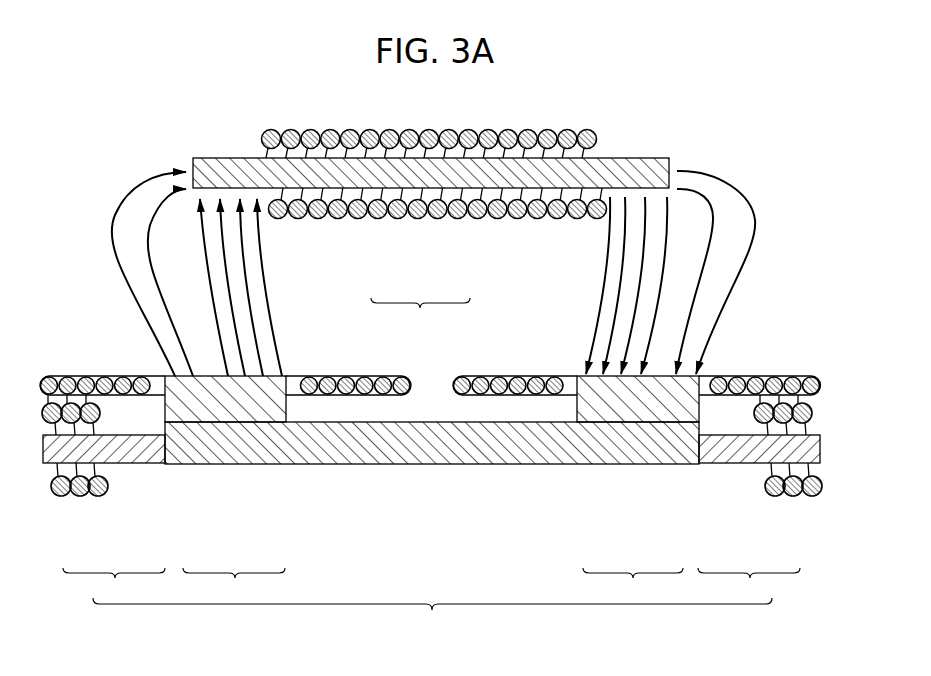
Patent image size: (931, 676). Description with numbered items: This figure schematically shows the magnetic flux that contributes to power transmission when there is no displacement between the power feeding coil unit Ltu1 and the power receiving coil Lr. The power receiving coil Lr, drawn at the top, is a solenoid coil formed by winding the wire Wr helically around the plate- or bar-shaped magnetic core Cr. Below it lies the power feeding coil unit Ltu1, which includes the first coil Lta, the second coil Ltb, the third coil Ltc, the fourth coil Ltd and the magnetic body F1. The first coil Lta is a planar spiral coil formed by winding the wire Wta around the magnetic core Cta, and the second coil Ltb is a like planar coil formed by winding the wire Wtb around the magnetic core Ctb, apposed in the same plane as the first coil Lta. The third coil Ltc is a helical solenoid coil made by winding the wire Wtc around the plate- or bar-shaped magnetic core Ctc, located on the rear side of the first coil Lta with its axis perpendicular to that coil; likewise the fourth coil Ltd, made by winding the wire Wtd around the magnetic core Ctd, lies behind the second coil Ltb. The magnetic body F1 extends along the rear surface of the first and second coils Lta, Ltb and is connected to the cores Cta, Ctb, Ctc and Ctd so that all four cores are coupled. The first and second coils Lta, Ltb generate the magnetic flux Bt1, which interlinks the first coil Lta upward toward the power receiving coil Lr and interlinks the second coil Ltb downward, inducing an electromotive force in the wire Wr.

The magnetic flux Bt1 is at (118, 197).
The magnetic core Cr is at (375, 178).
The wire Wr is at (447, 212).
The power receiving coil Lr is at (420, 314).
The magnetic body F1 is at (422, 453).
The magnetic core Cta is at (248, 410).
The magnetic core Ctb is at (613, 410).
The magnetic core Ctc is at (147, 453).
The magnetic core Ctd is at (748, 452).
The wire Wta is at (145, 393).
The wire Wtb is at (718, 393).
The wire Wtc is at (60, 493).
The wire Wtd is at (813, 495).
The third coil Ltc is at (114, 584).
The first coil Lta is at (234, 584).
The second coil Ltb is at (633, 584).
The fourth coil Ltd is at (749, 584).
The power feeding coil unit Ltu1 is at (432, 617).